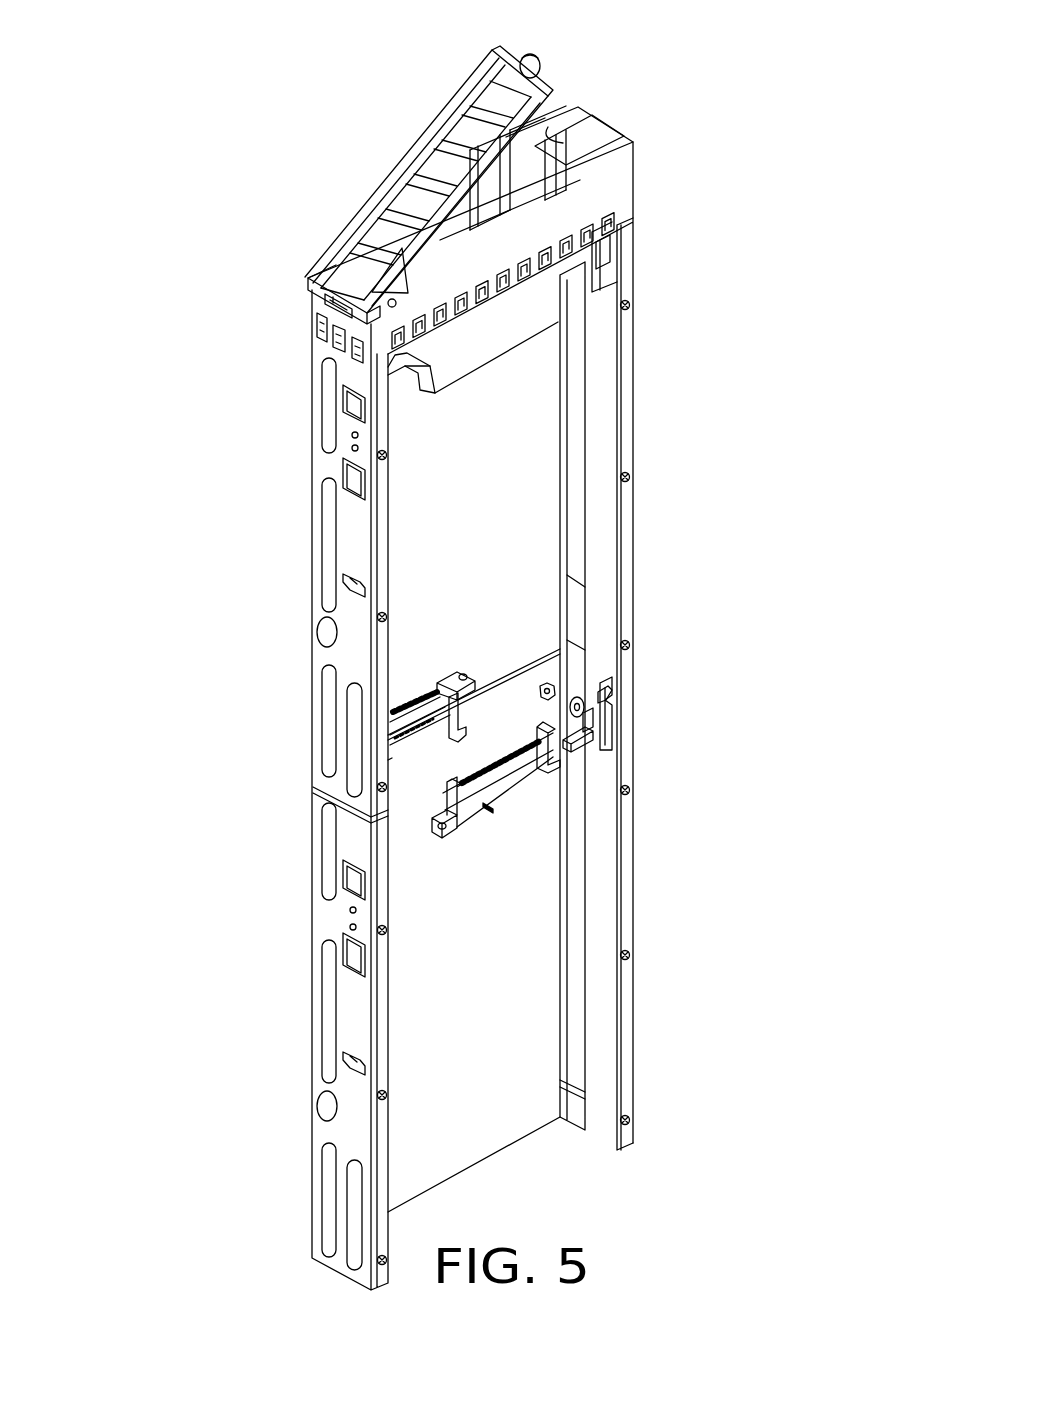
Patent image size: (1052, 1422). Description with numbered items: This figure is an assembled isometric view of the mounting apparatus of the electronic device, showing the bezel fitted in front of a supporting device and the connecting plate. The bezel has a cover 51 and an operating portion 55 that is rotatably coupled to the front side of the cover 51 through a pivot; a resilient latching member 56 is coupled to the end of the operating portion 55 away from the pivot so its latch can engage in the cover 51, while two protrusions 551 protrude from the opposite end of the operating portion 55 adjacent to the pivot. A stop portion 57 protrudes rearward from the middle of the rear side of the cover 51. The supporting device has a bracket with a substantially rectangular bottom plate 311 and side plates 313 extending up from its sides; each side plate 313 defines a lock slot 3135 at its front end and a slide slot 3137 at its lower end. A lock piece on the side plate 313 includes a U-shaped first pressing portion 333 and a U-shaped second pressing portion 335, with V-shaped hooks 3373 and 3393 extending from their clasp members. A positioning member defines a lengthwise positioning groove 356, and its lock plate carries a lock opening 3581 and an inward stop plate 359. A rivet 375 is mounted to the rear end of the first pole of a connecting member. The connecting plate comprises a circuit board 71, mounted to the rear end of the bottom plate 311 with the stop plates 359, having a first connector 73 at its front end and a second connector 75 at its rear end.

The cover 51 is at (617, 185).
The operating portion 55 is at (480, 105).
The resilient latching member 56 is at (530, 55).
The stop portion 57 is at (533, 308).
The circuit board 71 is at (400, 800).
The first connector 73 is at (410, 737).
The second connector 75 is at (575, 752).
The bottom plate 311 is at (535, 628).
The side plate 313 is at (343, 667).
The first pressing portion 333 is at (353, 475).
The second pressing portion 335 is at (353, 408).
The positioning groove 356 is at (577, 537).
The stop plate 359 is at (612, 732).
The rivet 375 is at (327, 633).
The protrusion 551 is at (318, 304).
The lock slot 3135 is at (357, 810).
The slide slot 3137 is at (332, 548).
The hook 3373 is at (347, 585).
The hook 3393 is at (608, 698).
The lock opening 3581 is at (610, 688).